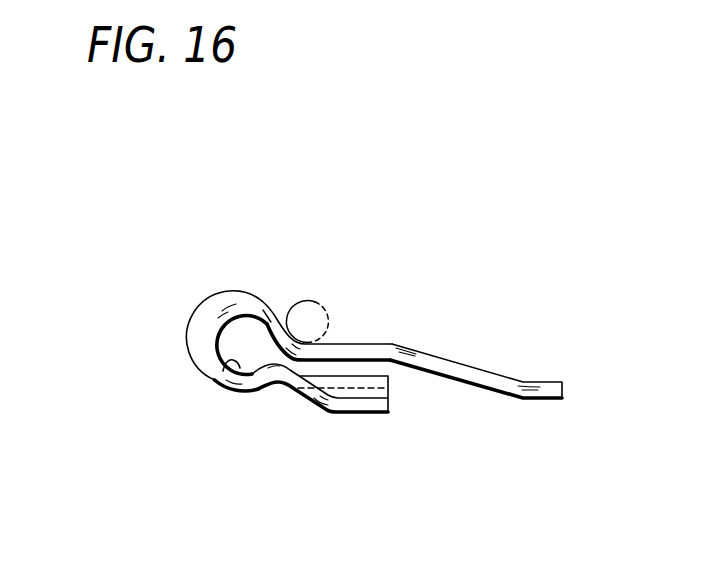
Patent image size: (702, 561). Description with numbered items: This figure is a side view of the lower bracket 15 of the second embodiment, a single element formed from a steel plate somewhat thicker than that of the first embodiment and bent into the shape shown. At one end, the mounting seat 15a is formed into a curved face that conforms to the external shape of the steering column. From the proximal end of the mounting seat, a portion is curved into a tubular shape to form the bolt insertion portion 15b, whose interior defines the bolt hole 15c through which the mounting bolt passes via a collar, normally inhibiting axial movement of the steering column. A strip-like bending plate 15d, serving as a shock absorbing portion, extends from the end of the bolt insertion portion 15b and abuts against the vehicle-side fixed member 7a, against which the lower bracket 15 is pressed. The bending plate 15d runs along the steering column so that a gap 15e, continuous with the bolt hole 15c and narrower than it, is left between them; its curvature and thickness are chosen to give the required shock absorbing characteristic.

The lower bracket 15 is at (332, 365).
The mounting seat 15a is at (359, 383).
The bolt insertion portion 15b is at (199, 334).
The bolt hole 15c is at (220, 374).
The bending plate 15d is at (353, 343).
The gap 15e is at (392, 364).
The vehicle-side fixed member 7a is at (303, 300).